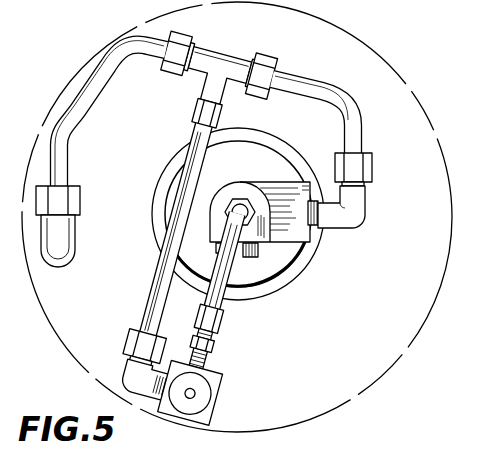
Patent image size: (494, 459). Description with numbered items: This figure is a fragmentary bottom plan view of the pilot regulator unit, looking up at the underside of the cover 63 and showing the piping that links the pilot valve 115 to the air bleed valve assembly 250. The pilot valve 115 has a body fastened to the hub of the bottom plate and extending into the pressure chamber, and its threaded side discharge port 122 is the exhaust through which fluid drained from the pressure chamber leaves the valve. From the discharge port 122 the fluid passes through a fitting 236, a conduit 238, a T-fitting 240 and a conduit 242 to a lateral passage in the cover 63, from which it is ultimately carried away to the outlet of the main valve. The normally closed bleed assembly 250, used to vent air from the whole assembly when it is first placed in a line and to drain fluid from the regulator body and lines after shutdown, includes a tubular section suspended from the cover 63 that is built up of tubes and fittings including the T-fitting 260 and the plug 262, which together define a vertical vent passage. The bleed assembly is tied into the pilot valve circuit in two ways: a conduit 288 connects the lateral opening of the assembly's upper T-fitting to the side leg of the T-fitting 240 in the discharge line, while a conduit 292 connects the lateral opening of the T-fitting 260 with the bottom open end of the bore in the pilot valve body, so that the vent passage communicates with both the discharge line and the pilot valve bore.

The cover 63 is at (446, 275).
The pilot valve 115 is at (246, 172).
The threaded side discharge port 122 is at (301, 229).
The fitting 236 is at (366, 196).
The conduit 238 is at (337, 97).
The T-fitting 240 is at (222, 52).
The conduit 242 is at (67, 156).
The air bleed valve assembly 250 is at (217, 363).
The T-fitting 260 is at (214, 375).
The plug 262 is at (199, 395).
The conduit 288 is at (153, 290).
The conduit 292 is at (222, 292).